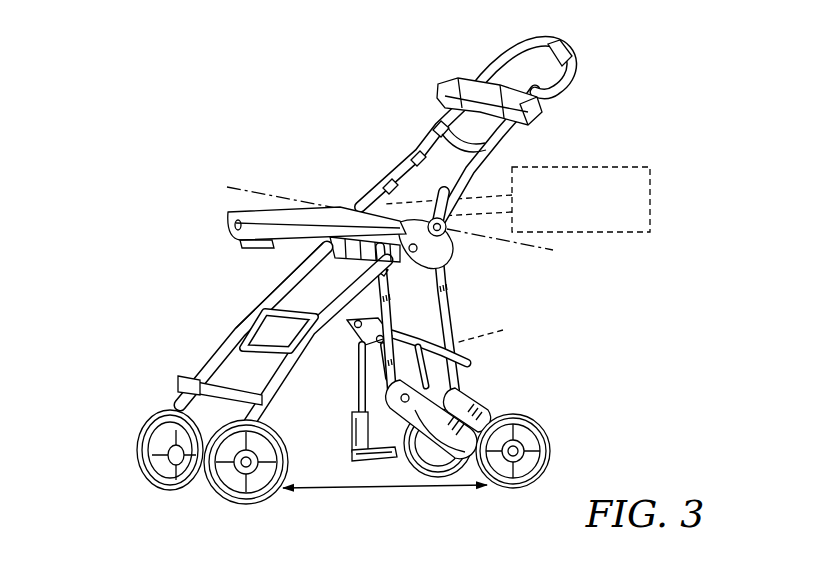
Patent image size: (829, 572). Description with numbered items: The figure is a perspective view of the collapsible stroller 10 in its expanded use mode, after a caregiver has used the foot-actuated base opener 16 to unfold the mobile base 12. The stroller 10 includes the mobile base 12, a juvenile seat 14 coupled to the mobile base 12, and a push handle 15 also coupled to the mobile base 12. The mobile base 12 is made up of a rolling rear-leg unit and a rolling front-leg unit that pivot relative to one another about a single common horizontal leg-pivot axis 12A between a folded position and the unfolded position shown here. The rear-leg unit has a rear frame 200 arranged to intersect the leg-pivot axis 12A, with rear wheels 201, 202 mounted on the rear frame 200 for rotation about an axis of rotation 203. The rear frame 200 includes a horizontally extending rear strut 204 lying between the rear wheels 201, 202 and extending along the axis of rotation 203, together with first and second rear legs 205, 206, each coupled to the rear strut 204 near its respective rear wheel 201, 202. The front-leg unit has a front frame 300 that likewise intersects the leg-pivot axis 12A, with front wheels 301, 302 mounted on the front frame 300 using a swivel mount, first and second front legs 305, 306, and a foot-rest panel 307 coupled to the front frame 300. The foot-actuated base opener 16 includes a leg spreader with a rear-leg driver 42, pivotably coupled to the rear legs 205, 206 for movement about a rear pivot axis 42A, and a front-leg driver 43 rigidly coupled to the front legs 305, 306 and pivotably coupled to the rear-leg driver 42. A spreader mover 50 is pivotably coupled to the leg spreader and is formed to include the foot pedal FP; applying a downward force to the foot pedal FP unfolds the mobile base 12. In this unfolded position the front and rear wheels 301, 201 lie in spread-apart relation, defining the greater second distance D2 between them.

The collapsible stroller 10 is at (388, 283).
The mobile base 12 is at (200, 363).
The leg-pivot axis 12A is at (265, 188).
The juvenile seat 14 is at (652, 206).
The push handle 15 is at (572, 78).
The foot-actuated base opener 16 is at (407, 323).
The rear-leg driver 42 is at (474, 370).
The rear pivot axis 42A is at (503, 332).
The front-leg driver 43 is at (253, 362).
The spreader mover 50 is at (352, 388).
The rear frame 200 is at (464, 384).
The first rear wheel 201 is at (554, 443).
The second rear wheel 202 is at (437, 478).
The axis of rotation 203 is at (545, 432).
The rear strut 204 is at (448, 463).
The first rear leg 205 is at (447, 261).
The second rear leg 206 is at (445, 285).
The front frame 300 is at (247, 310).
The first front wheel 301 is at (246, 504).
The second front wheel 302 is at (137, 450).
The first front leg 305 is at (287, 362).
The second front leg 306 is at (297, 277).
The foot-rest panel 307 is at (213, 398).
The foot pedal FP is at (372, 458).
The second distance D2 is at (390, 494).